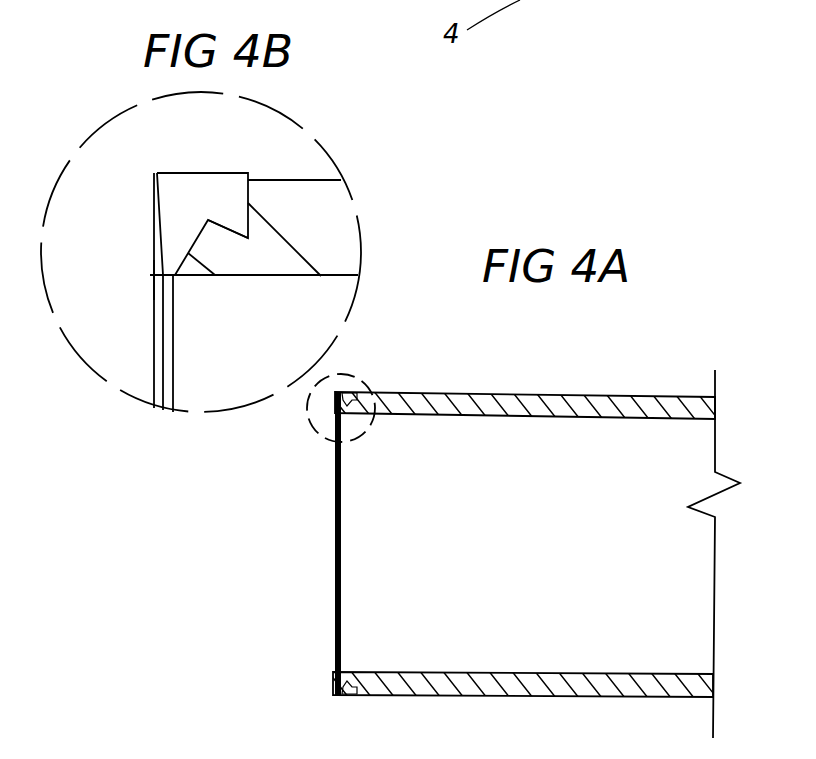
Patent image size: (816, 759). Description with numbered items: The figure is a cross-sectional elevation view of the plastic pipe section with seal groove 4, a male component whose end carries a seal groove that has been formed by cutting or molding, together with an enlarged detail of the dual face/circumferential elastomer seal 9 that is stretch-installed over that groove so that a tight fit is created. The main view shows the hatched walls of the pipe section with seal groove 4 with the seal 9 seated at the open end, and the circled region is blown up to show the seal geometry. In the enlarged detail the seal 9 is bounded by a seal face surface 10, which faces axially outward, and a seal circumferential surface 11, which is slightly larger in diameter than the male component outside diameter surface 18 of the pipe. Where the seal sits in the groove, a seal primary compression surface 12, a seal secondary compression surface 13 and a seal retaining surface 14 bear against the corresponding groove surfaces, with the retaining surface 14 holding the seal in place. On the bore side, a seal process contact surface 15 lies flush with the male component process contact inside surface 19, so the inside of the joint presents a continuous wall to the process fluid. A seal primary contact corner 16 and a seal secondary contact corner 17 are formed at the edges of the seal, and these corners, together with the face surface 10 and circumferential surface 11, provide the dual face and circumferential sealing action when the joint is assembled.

In FIG. 4A, the pipe section with seal groove 4 is at (477, 437).
In FIG. 4A, the dual face/circumferential elastomer seal 9 is at (337, 408).
In FIG. 4B, the seal face surface 10 is at (157, 328).
In FIG. 4B, the seal circumferential surface 11 is at (205, 172).
In FIG. 4B, the seal primary compression surface 12 is at (260, 180).
In FIG. 4B, the seal secondary compression surface 13 is at (180, 272).
In FIG. 4B, the seal retaining surface 14 is at (223, 233).
In FIG. 4B, the seal process contact surface 15 is at (166, 378).
In FIG. 4B, the seal primary contact corner 16 is at (156, 172).
In FIG. 4B, the seal secondary contact corner 17 is at (153, 273).
In FIG. 4B, the male component outside diameter surface 18 is at (327, 180).
In FIG. 4B, the male component process contact inside surface 19 is at (337, 277).